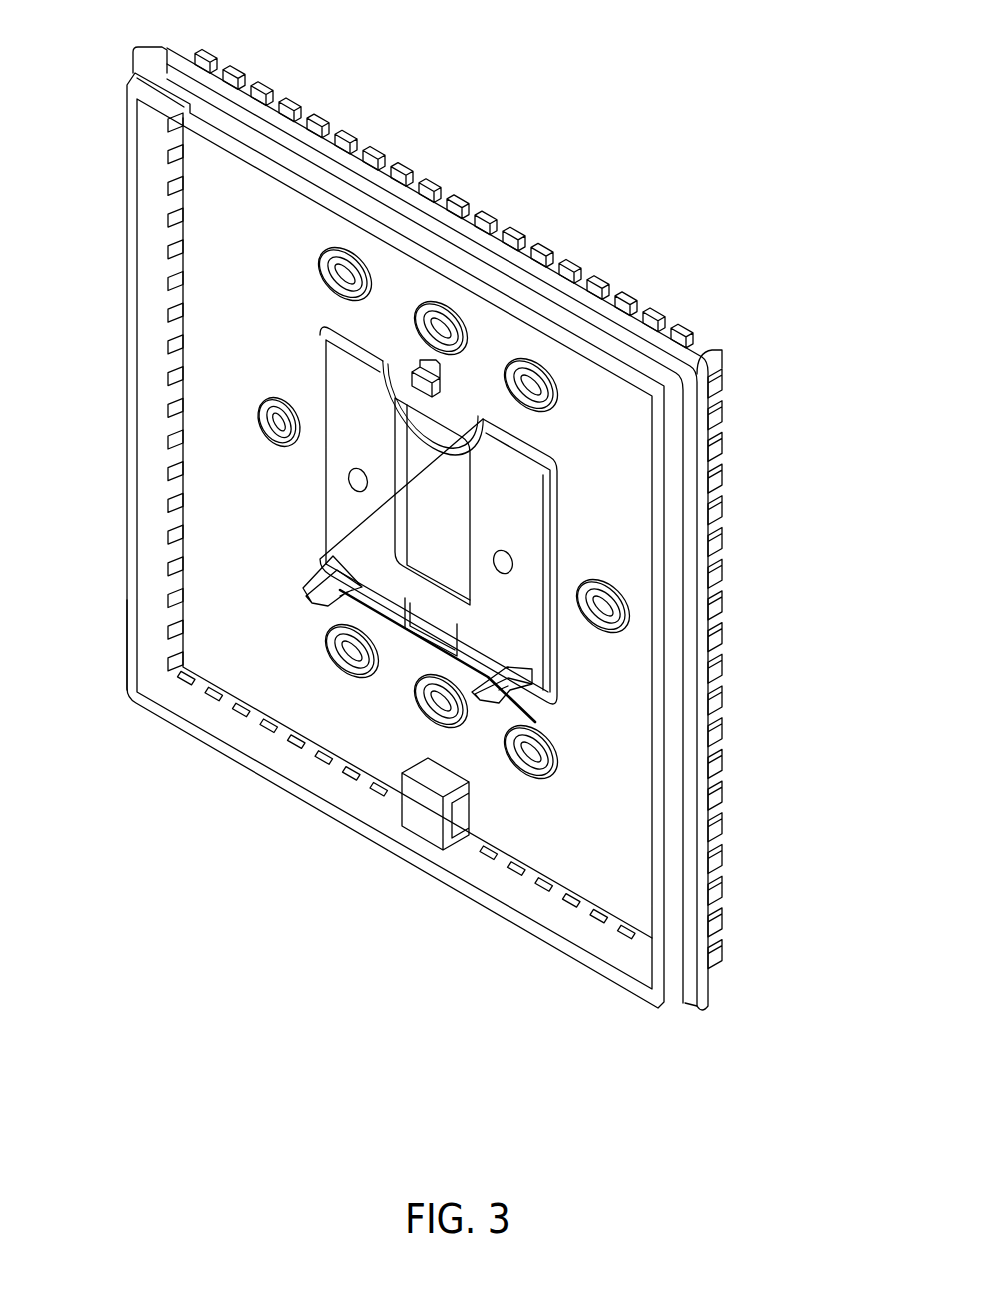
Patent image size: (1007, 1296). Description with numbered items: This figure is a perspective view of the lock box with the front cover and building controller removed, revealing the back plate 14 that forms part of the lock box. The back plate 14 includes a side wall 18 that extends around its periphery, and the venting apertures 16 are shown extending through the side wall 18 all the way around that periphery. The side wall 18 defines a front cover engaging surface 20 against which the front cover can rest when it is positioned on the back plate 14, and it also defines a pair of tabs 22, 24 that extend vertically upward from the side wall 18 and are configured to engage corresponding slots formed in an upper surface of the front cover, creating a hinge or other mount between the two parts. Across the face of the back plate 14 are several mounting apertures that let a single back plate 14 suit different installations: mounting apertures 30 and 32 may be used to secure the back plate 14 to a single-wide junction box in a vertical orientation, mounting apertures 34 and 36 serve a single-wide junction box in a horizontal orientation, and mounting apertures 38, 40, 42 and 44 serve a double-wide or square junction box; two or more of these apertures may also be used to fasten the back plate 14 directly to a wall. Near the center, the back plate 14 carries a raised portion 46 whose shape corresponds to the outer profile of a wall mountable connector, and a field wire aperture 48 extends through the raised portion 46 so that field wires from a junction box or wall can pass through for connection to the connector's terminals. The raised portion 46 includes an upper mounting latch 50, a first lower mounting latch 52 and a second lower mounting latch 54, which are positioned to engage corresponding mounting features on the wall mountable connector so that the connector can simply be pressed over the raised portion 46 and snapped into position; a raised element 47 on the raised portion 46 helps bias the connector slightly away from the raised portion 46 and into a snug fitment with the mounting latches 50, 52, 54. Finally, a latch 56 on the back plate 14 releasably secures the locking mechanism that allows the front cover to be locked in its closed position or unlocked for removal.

The back plate 14 is at (542, 130).
The venting apertures 16 is at (170, 183).
The side wall 18 is at (130, 633).
The front cover engaging surface 20 is at (688, 1006).
The tab 22 is at (172, 97).
The tab 24 is at (636, 363).
The mounting aperture 30 is at (447, 326).
The mounting aperture 32 is at (437, 708).
The mounting aperture 34 is at (275, 422).
The mounting aperture 36 is at (617, 617).
The mounting aperture 38 is at (343, 260).
The mounting aperture 40 is at (537, 372).
The mounting aperture 42 is at (338, 655).
The mounting aperture 44 is at (540, 757).
The raised portion 46 is at (530, 498).
The raised element 47 is at (462, 636).
The field wire aperture 48 is at (455, 487).
The upper mounting latch 50 is at (423, 378).
The first lower mounting latch 52 is at (305, 588).
The second lower mounting latch 54 is at (512, 690).
The latch 56 is at (423, 822).